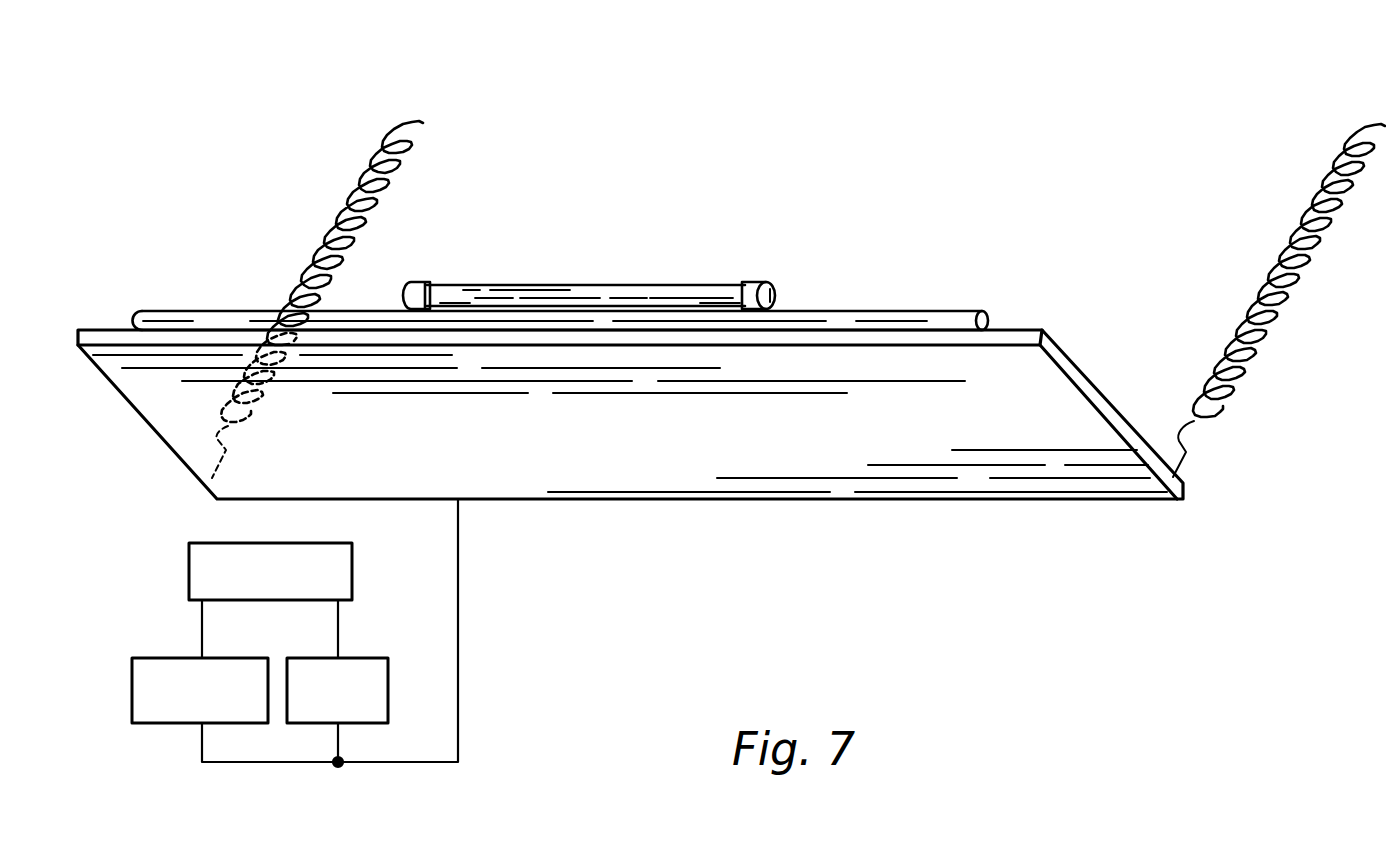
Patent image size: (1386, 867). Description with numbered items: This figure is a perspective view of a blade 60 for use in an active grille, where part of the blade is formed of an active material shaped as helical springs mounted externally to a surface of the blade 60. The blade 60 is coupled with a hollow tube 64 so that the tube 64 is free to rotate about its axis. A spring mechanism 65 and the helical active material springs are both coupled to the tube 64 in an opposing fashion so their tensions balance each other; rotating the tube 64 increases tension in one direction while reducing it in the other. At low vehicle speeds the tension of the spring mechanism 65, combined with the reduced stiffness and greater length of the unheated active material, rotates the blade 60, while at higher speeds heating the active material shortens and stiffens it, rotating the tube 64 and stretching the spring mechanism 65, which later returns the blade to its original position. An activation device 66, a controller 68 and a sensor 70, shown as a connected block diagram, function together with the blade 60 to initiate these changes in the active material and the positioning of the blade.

The blade 60 is at (1085, 157).
The hollow tube 64 is at (593, 287).
The spring mechanism 65 is at (878, 311).
The activation device 66 is at (172, 658).
The controller 68 is at (188, 572).
The sensor 70 is at (366, 658).